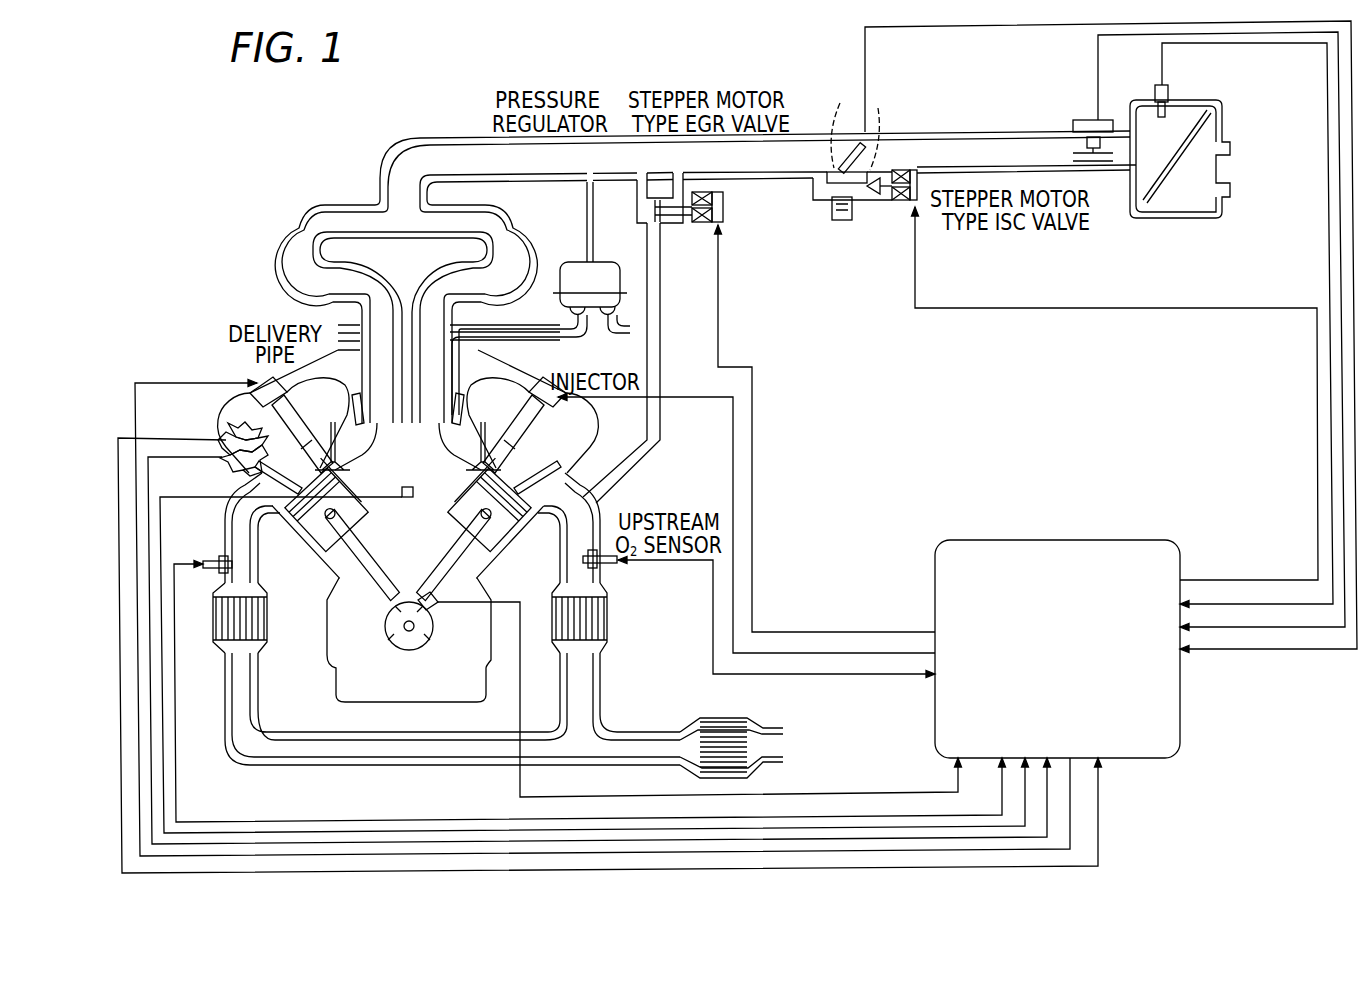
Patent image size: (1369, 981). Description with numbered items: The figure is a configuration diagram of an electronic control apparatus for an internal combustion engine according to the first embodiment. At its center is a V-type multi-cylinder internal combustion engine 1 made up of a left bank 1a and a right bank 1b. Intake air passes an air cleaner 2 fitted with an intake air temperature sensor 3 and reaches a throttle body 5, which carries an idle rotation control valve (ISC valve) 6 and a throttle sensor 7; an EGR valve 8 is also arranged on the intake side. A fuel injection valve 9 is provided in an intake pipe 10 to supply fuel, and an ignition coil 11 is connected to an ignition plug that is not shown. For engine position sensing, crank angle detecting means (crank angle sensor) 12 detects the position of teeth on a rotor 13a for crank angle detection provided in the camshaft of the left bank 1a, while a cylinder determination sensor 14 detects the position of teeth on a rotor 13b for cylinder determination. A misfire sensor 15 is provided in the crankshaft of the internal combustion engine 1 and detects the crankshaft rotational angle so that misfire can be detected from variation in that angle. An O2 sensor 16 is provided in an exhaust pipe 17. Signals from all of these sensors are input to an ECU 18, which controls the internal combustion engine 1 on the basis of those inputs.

The V-type multi-cylinder internal combustion engine 1 is at (328, 660).
The left bank 1a is at (258, 378).
The right bank 1b is at (592, 424).
The air cleaner 2 is at (1188, 202).
The intake air temperature sensor 3 is at (1159, 87).
The throttle body 5 is at (837, 132).
The idle rotation control valve (ISC valve) 6 is at (877, 206).
The throttle sensor 7 is at (862, 128).
The EGR valve 8 is at (723, 206).
The fuel injection valve 9 is at (513, 376).
The intake pipe 10 is at (458, 371).
The ignition coil 11 is at (264, 404).
The crank angle detecting means (crank angle sensor) 12 is at (225, 434).
The rotor for crank angle detection 13a is at (209, 468).
The rotor for cylinder determination 13b is at (244, 474).
The cylinder determination sensor 14 is at (226, 445).
The misfire sensor 15 is at (386, 639).
The O2 sensor 16 is at (214, 576).
The exhaust pipe 17 is at (582, 522).
The ECU 18 is at (995, 540).